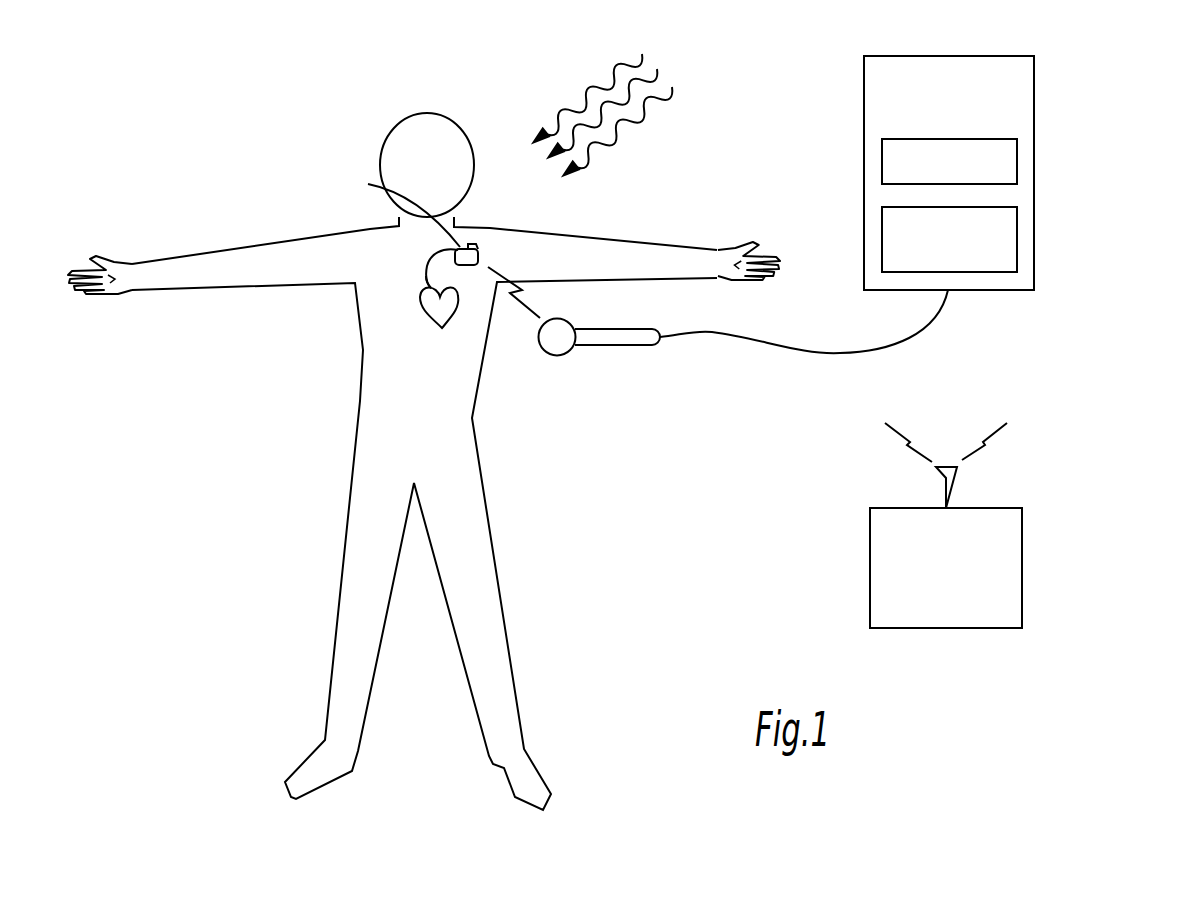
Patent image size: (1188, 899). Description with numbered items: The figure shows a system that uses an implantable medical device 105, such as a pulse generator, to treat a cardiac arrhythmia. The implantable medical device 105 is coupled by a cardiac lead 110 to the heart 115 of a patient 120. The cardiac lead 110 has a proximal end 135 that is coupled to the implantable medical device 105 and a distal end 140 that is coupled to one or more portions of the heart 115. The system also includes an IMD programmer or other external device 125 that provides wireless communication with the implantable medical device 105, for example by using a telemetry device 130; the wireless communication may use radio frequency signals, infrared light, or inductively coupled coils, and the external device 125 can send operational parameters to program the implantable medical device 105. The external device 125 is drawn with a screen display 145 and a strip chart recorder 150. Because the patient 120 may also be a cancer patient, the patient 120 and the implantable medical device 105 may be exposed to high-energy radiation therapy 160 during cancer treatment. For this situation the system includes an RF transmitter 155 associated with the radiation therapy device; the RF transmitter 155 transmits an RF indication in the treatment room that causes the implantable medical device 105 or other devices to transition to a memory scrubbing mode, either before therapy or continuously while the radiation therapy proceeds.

The implantable medical device 105 is at (480, 253).
The cardiac lead 110 is at (421, 259).
The heart 115 is at (429, 318).
The patient 120 is at (358, 388).
The external device 125 is at (1035, 74).
The telemetry device 130 is at (560, 356).
The proximal end 135 is at (397, 208).
The distal end 140 is at (421, 281).
The screen display 145 is at (1018, 148).
The strip chart recorder 150 is at (1018, 216).
The RF transmitter 155 is at (1003, 508).
The high-energy radiation therapy 160 is at (586, 84).